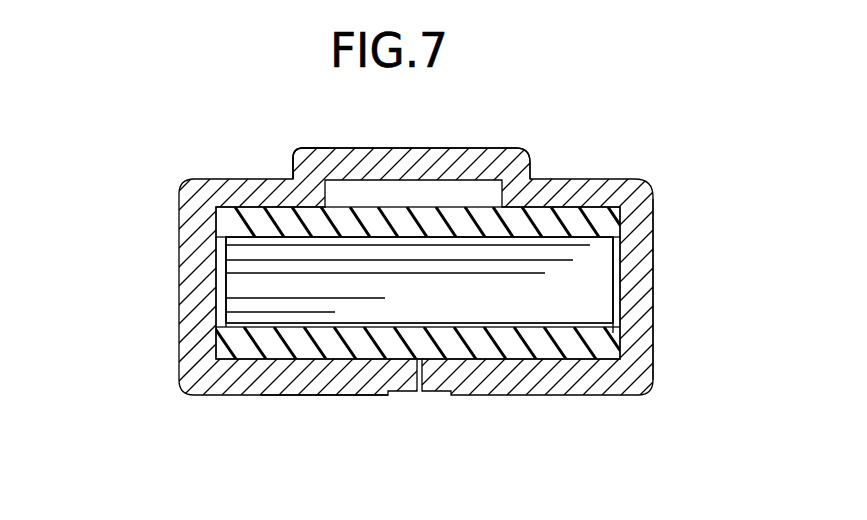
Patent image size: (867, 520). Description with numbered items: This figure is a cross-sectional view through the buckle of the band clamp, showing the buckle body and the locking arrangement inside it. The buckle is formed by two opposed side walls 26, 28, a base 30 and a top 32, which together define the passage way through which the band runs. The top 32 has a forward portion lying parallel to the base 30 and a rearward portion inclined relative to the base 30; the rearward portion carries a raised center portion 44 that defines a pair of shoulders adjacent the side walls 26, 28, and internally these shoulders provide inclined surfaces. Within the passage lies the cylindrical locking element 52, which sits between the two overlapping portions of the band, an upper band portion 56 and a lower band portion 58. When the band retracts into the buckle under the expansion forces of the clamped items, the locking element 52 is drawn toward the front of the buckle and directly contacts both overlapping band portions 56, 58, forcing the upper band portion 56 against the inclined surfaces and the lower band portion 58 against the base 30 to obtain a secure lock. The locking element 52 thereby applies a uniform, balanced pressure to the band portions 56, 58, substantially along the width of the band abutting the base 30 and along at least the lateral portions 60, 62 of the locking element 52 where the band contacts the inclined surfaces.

The side wall 26 is at (179, 297).
The side wall 28 is at (653, 337).
The base 30 is at (317, 410).
The top 32 is at (320, 120).
The raised center portion 44 is at (405, 147).
The locking element 52 is at (597, 287).
The upper band portion 56 is at (562, 212).
The lower band portion 58 is at (548, 343).
The lateral portion of the locking element 60 is at (245, 274).
The lateral portion of the locking element 62 is at (583, 252).